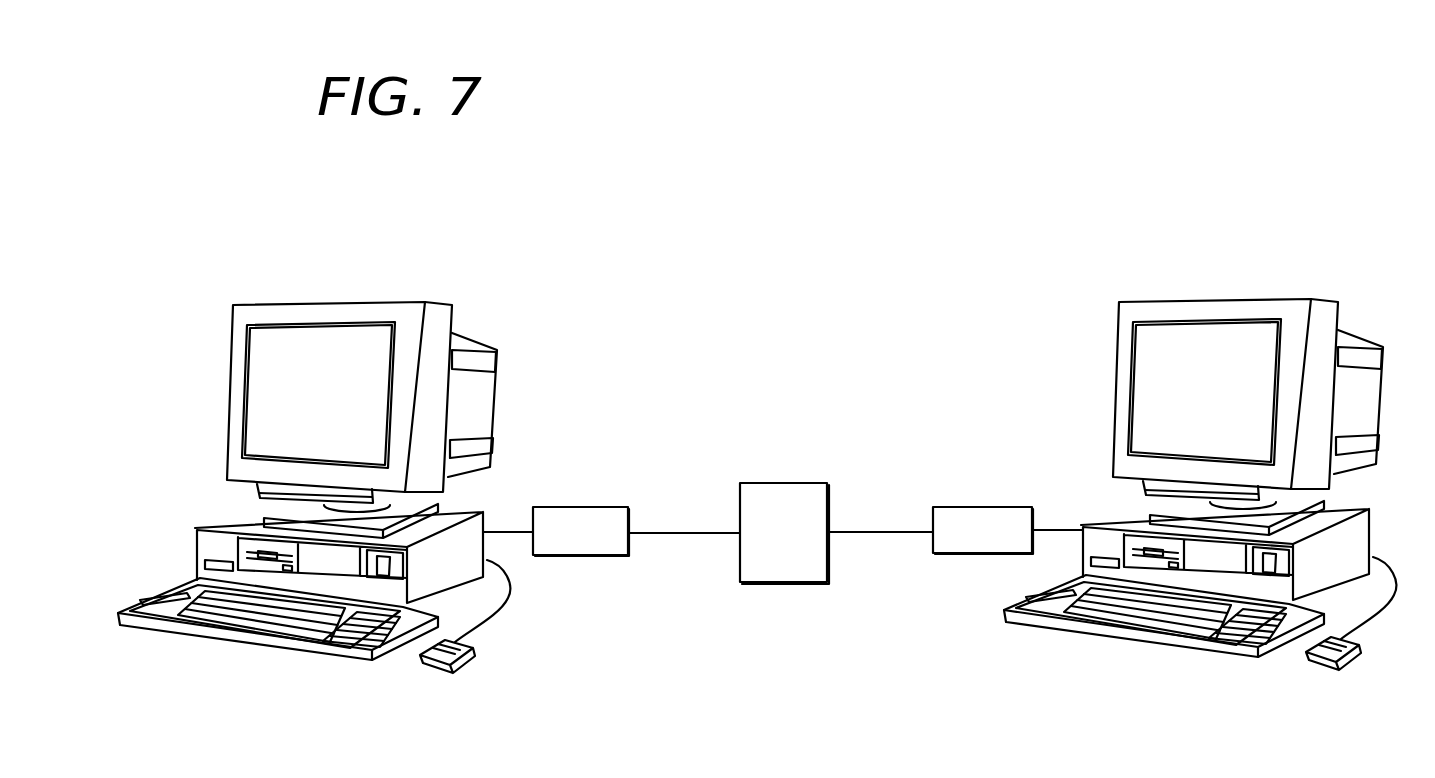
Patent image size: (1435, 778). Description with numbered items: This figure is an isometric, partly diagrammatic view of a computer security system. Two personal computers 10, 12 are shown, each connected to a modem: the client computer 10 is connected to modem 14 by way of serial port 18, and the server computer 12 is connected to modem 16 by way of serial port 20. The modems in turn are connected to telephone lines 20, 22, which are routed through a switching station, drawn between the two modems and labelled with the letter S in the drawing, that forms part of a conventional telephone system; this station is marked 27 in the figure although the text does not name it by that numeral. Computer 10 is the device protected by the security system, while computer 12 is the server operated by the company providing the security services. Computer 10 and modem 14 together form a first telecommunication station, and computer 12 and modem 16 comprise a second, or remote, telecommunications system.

The personal computer 10 is at (473, 382).
The personal computer 12 is at (1367, 362).
The modem 14 is at (593, 507).
The modem 16 is at (1003, 505).
The serial port 18 is at (500, 531).
The serial port / telephone line 20 is at (660, 533).
The telephone line 22 is at (867, 533).
The telephone switch / network 27 is at (762, 482).